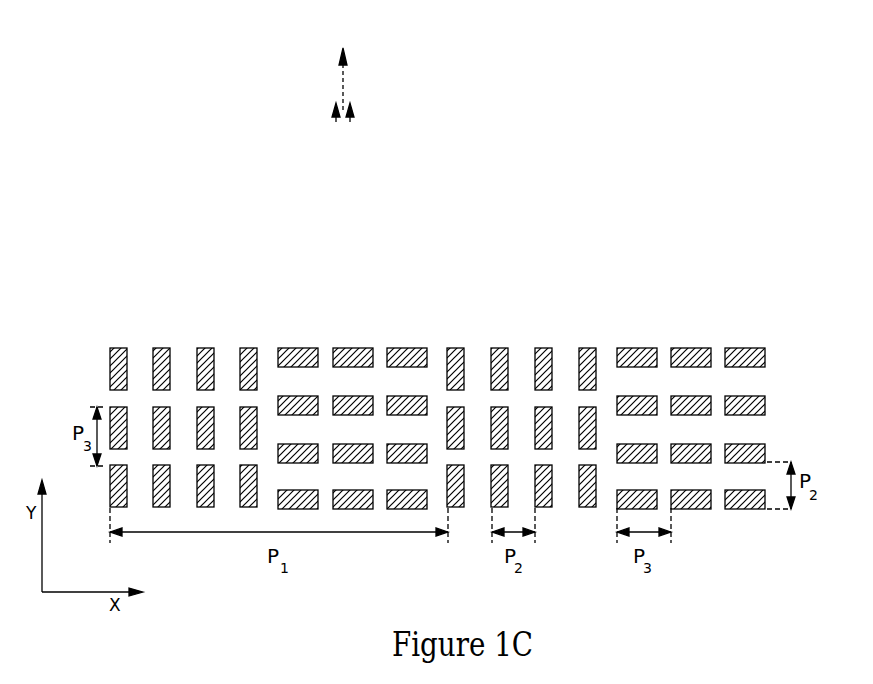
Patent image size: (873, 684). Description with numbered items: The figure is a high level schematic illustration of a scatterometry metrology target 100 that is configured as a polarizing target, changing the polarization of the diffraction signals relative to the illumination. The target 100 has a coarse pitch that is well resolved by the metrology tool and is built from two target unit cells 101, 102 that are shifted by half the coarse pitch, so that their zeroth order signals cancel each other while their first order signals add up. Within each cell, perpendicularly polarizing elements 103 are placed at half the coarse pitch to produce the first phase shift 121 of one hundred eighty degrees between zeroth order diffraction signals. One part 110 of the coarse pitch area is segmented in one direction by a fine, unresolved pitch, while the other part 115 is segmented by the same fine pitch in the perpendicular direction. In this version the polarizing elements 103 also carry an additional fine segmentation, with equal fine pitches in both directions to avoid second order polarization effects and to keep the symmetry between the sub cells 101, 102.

The scatterometry metrology target 100 is at (40, 327).
The target unit cell 101 is at (433, 258).
The target unit cell 102 is at (605, 198).
The perpendicularly polarizing elements 103 is at (589, 341).
The part of the coarse pitch area 110 is at (265, 338).
The other part of the coarse pitch area 115 is at (433, 338).
The first phase shift 121 is at (343, 80).